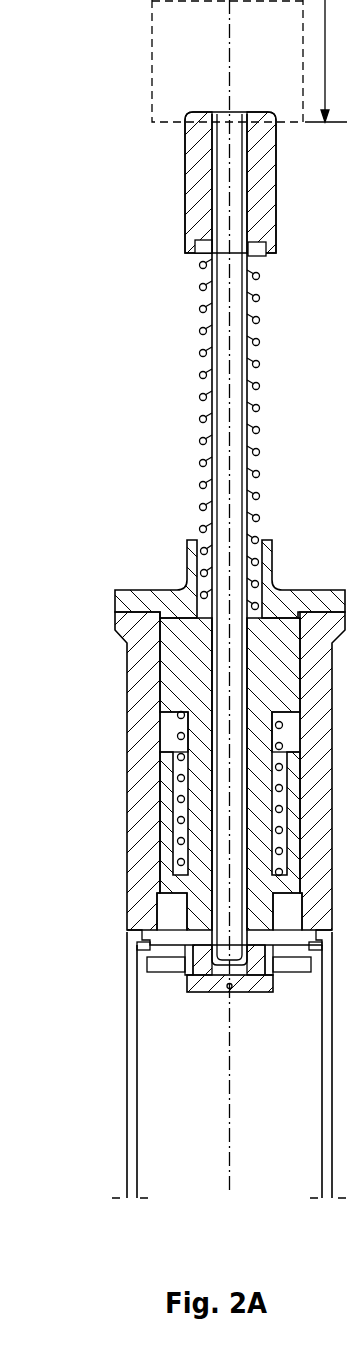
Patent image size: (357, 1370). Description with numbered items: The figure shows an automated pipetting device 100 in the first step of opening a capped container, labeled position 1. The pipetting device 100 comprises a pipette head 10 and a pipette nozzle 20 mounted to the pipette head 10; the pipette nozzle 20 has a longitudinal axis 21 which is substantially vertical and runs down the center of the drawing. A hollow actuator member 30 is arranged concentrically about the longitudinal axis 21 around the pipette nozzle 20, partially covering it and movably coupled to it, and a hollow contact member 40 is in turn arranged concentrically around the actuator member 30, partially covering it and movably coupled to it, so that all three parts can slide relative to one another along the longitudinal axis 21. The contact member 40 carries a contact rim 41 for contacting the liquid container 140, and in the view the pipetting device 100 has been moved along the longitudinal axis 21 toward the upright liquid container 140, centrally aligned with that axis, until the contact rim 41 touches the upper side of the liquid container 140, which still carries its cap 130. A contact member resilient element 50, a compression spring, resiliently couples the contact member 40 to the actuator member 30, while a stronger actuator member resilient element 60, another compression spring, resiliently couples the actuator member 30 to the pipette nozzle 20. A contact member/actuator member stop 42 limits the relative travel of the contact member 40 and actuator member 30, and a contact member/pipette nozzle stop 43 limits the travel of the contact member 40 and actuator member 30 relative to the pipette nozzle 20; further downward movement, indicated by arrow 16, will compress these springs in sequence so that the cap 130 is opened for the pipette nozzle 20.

The position 1 is at (332, 163).
The pipette head 10 is at (285, 62).
The stroke direction 16 is at (339, 61).
The pipette nozzle 20 is at (185, 230).
The longitudinal axis 21 is at (229, 1127).
The actuator member 30 is at (183, 812).
The contact member 40 is at (127, 650).
The contact rim 41 is at (137, 943).
The contact member/actuator member stop 42 is at (165, 745).
The contact member/pipette nozzle stop 43 is at (190, 540).
The contact member resilient element 50 is at (178, 850).
The actuator member resilient element 60 is at (198, 402).
The automated pipetting device 100 is at (125, 109).
The cap 130 is at (195, 992).
The liquid container 140 is at (127, 1150).